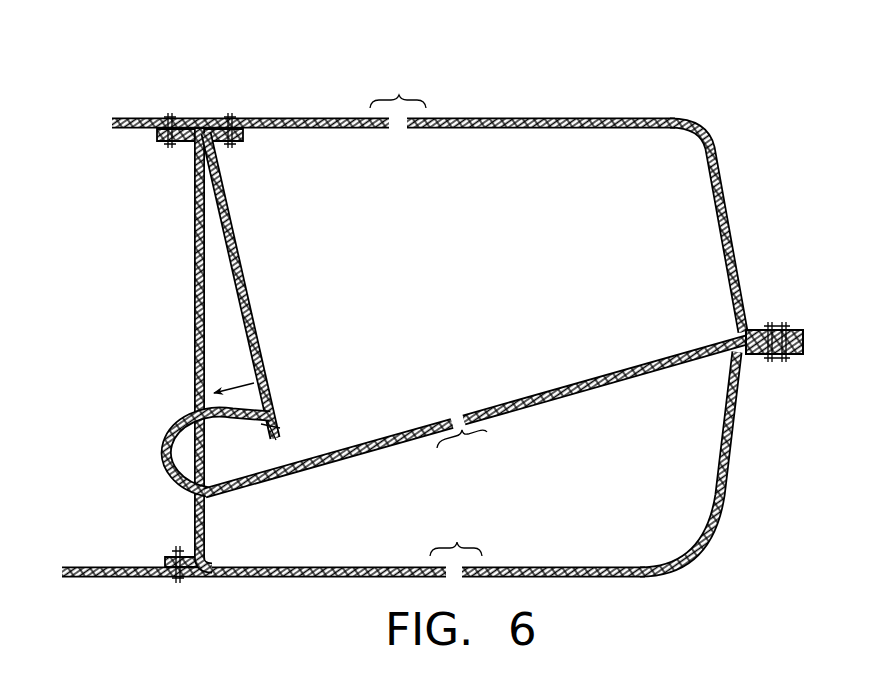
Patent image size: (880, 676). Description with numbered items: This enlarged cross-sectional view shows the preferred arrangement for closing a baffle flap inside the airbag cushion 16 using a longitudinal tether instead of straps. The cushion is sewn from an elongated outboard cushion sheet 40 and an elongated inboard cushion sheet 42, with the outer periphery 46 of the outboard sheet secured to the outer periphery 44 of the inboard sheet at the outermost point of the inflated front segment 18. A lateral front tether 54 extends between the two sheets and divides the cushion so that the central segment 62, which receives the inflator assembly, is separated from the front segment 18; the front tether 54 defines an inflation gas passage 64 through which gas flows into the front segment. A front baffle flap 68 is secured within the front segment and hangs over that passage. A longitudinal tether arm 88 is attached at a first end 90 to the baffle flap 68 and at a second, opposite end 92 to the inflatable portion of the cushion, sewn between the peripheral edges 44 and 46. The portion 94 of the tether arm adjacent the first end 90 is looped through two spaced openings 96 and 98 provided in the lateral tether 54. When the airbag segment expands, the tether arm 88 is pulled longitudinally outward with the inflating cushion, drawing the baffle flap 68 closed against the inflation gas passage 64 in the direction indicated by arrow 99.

The airbag cushion 16 is at (495, 99).
The front segment 18 is at (736, 470).
The outboard cushion sheet 40 is at (688, 567).
The inboard cushion sheet 42 is at (699, 128).
The outer periphery of inboard cushion sheet 44 is at (790, 332).
The outer periphery of outboard cushion sheet 46 is at (784, 358).
The front tether 54 is at (193, 201).
The central segment 62 is at (108, 566).
The inflation gas passage 64 is at (193, 262).
The front baffle flap 68 is at (222, 180).
The longitudinal tether arm 88 is at (660, 362).
The first end of tether arm 90 is at (265, 430).
The second end of tether arm 92 is at (756, 334).
The looped portion of tether arm 94 is at (174, 445).
The first opening in lateral tether 96 is at (188, 412).
The second opening in lateral tether 98 is at (193, 511).
The arrow 99 is at (238, 386).